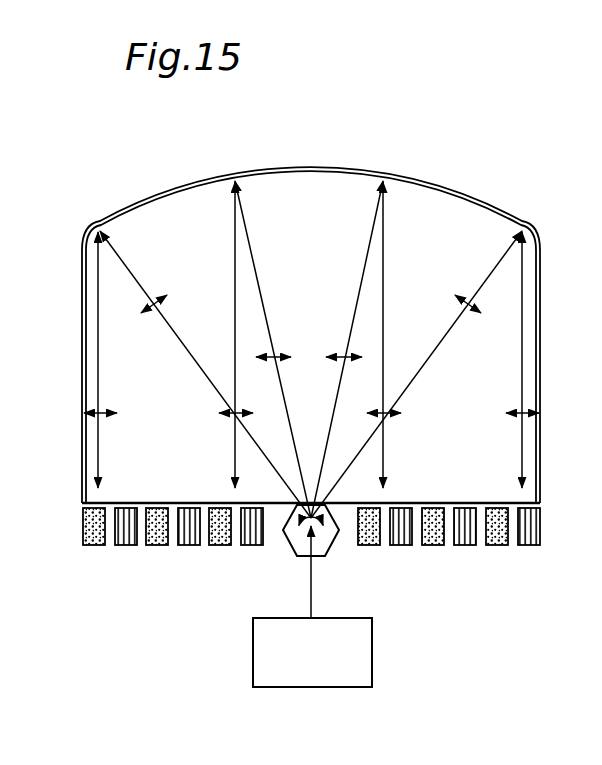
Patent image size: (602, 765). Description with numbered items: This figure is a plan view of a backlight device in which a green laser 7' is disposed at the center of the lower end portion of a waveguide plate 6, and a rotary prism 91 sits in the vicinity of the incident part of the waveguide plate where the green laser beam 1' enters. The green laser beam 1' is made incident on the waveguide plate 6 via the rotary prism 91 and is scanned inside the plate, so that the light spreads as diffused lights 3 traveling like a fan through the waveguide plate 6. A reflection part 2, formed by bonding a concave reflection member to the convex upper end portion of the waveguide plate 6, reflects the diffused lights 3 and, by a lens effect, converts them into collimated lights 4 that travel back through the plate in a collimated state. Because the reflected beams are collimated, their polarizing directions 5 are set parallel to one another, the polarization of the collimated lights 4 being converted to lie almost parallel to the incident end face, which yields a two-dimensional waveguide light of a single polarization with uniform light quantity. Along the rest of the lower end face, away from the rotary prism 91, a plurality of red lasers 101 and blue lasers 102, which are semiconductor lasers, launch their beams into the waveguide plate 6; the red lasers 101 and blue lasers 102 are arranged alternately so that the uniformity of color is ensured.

The reflection part 2 is at (369, 170).
The diffused lights 3 is at (120, 256).
The collimated lights 4 is at (97, 303).
The polarizing directions 5 is at (83, 410).
The waveguide plate 6 is at (542, 483).
The rotary prism 91 is at (340, 540).
The red lasers 101 is at (83, 524).
The blue lasers 102 is at (125, 546).
The green laser beam 1' is at (282, 587).
The green laser 7' is at (348, 652).